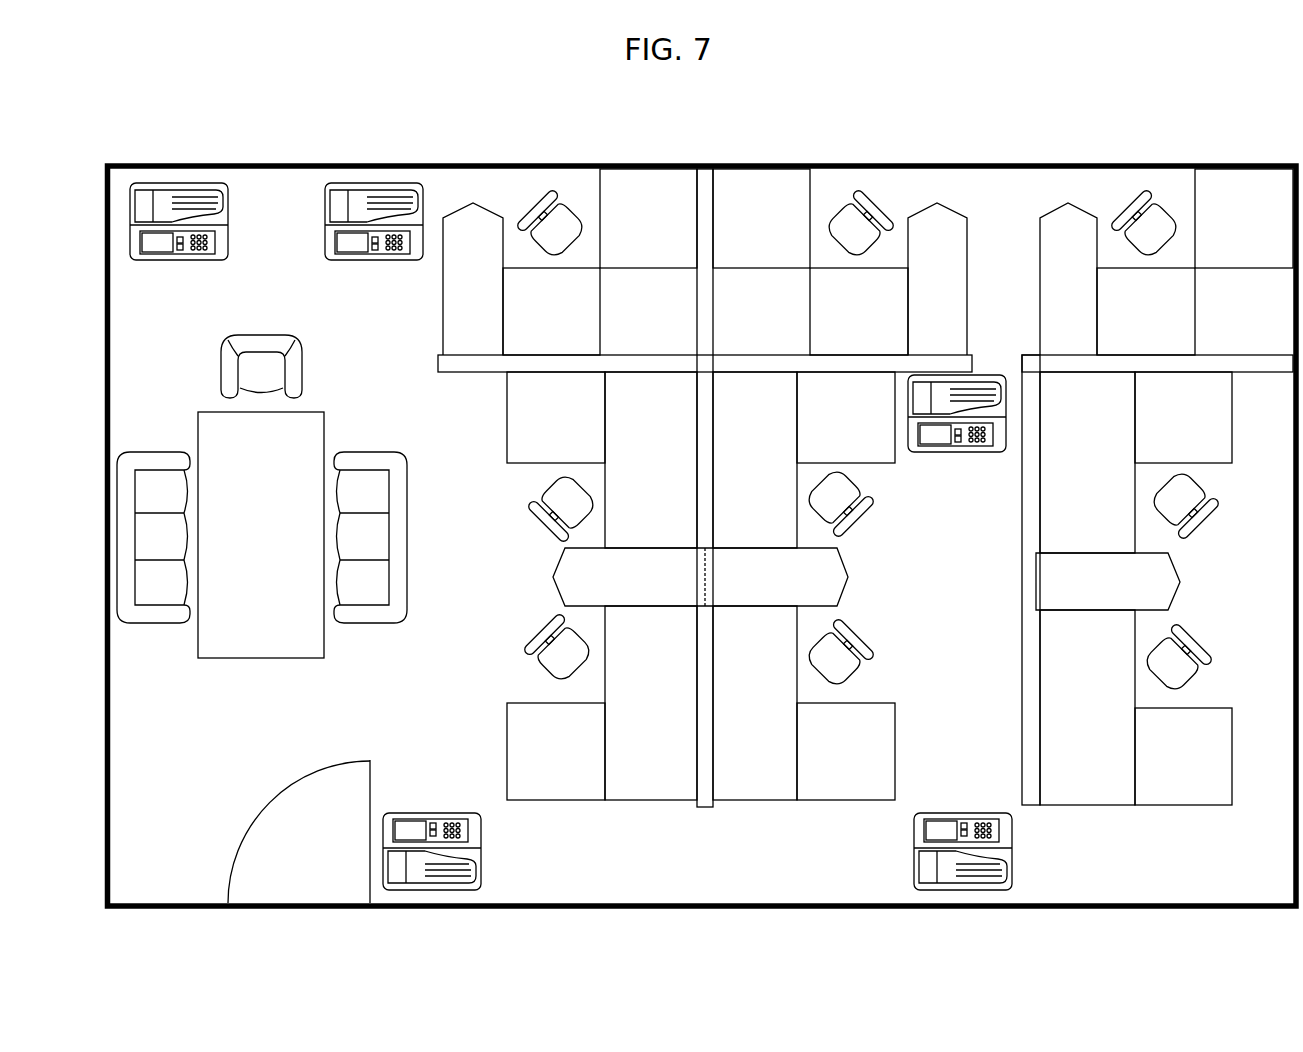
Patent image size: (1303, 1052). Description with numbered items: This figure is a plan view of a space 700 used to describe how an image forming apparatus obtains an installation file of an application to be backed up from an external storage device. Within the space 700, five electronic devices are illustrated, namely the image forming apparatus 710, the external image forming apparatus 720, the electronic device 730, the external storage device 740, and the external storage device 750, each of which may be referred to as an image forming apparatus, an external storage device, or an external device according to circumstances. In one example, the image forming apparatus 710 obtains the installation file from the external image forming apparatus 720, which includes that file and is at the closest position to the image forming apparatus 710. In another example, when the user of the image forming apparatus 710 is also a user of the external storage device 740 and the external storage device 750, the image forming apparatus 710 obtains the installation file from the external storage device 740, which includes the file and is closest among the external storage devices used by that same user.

The space 700 is at (990, 162).
The image forming apparatus 710 is at (182, 188).
The external image forming apparatus 720 is at (376, 188).
The electronic device 730 is at (990, 380).
The external storage device 740 is at (460, 890).
The external storage device 750 is at (972, 890).